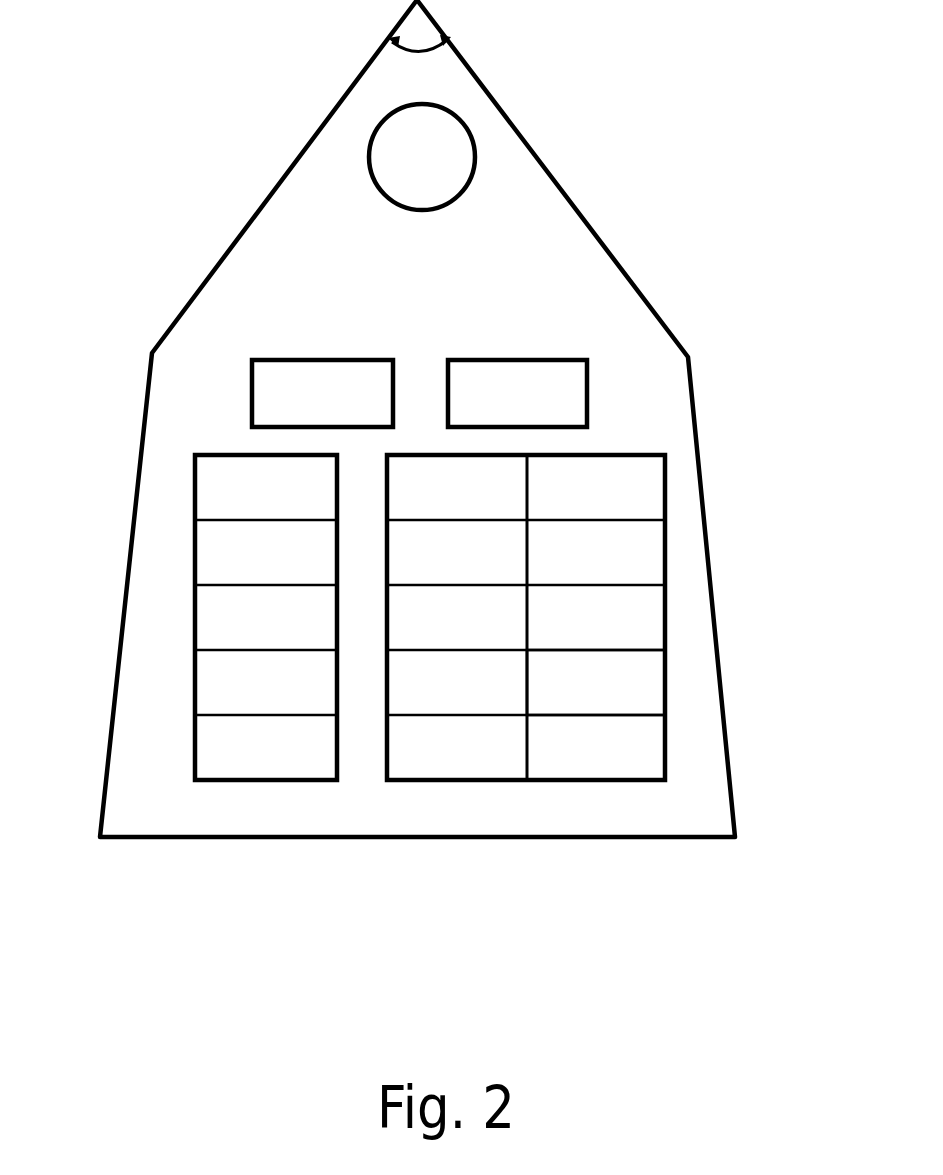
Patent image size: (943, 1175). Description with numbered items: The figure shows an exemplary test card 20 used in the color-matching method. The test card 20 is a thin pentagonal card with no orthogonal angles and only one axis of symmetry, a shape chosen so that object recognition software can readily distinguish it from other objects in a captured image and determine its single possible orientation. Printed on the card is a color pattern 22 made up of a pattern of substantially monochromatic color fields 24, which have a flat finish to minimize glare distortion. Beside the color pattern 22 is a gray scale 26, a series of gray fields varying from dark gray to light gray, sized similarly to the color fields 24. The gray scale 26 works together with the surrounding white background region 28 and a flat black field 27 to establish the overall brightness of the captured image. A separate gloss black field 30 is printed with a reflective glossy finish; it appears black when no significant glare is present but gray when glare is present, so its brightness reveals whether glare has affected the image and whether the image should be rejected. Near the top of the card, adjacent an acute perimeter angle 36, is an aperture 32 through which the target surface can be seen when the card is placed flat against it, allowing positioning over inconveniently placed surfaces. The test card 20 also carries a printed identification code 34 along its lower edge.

The test card 20 is at (205, 130).
The color pattern 22 is at (667, 560).
The color fields 24 is at (643, 697).
The gray scale 26 is at (193, 692).
The flat black field 27 is at (269, 398).
The white background region 28 is at (547, 252).
The gloss black field 30 is at (573, 387).
The aperture 32 is at (475, 137).
The identification code 34 is at (441, 820).
The acute perimeter angle 36 is at (420, 53).